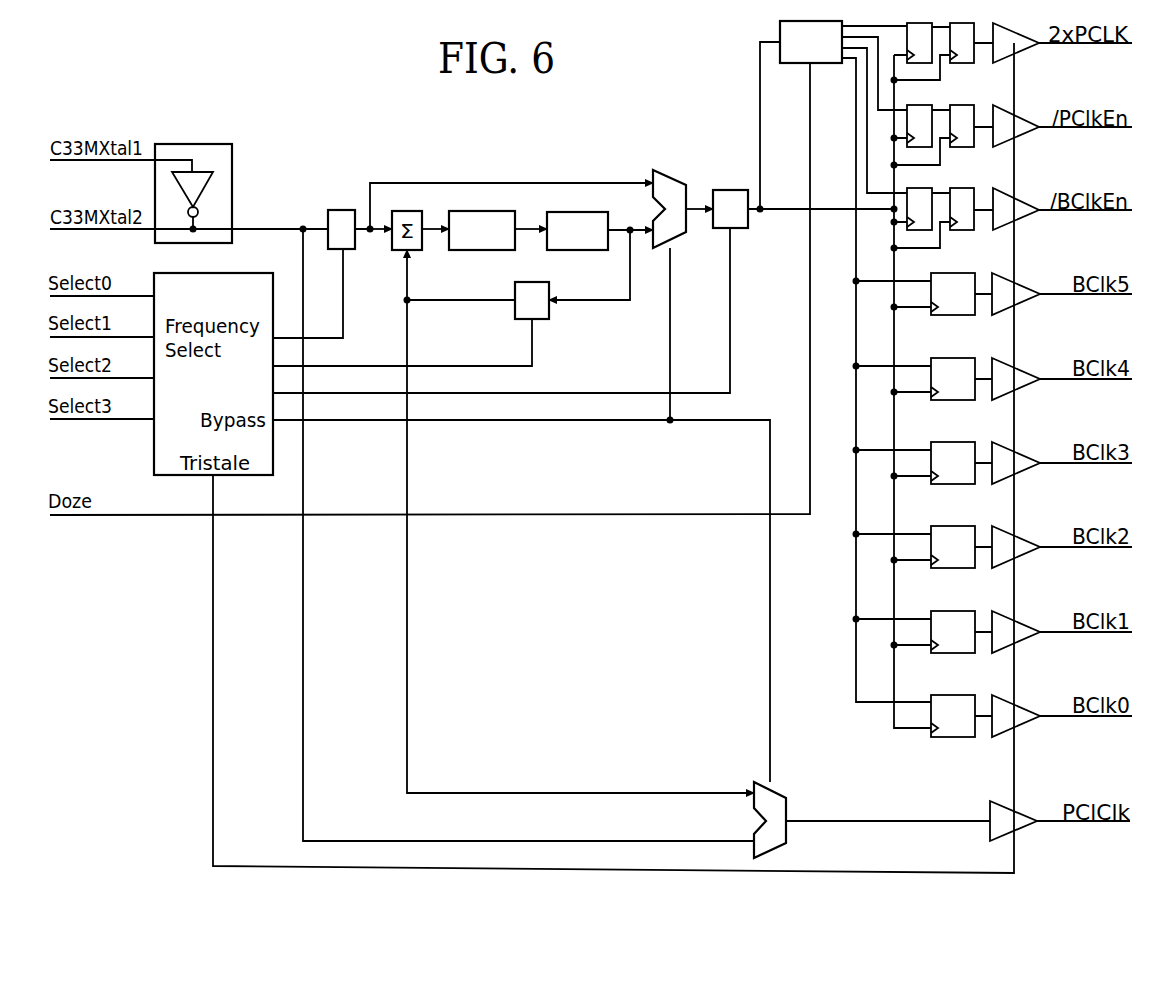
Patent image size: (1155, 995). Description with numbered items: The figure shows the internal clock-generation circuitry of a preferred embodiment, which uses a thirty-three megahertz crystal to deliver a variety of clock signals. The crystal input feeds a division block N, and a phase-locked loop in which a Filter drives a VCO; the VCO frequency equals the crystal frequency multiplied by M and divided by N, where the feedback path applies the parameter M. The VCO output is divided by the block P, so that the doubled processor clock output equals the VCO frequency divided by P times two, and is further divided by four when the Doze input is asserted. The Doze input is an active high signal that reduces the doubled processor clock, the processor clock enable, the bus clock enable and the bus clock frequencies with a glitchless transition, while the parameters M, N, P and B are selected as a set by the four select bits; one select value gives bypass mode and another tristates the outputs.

The N divider parameter N is at (341, 229).
The element Filter is at (482, 230).
The element VCO is at (577, 231).
The P divider parameter P is at (730, 209).
The M multiplier parameter M is at (532, 300).
The element Doze is at (811, 42).